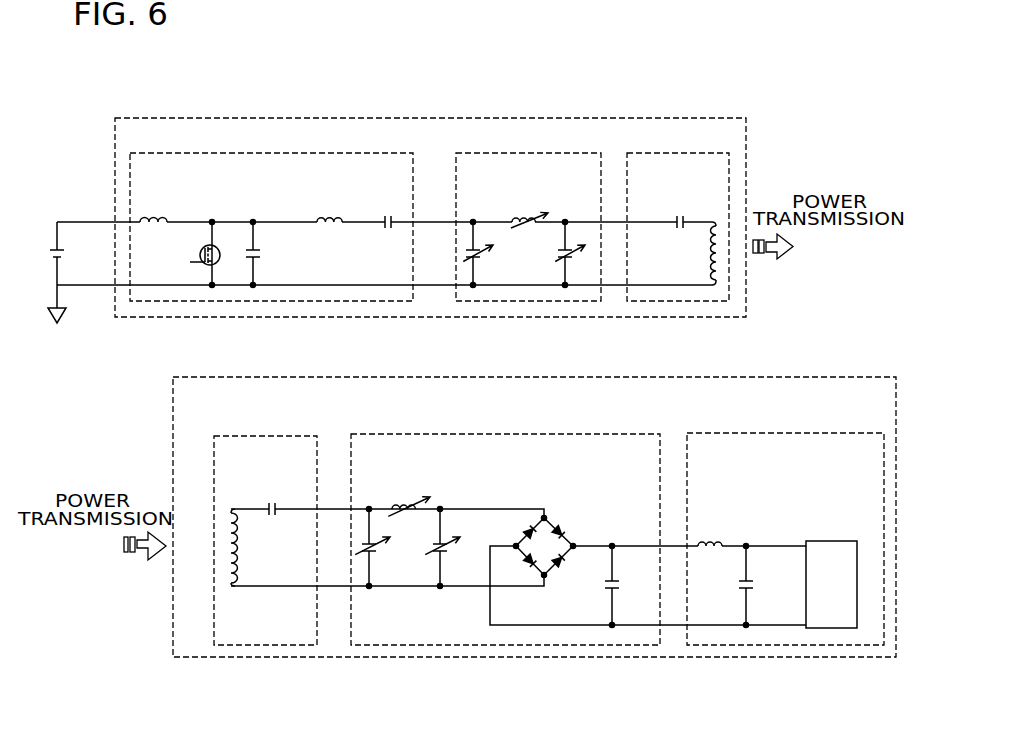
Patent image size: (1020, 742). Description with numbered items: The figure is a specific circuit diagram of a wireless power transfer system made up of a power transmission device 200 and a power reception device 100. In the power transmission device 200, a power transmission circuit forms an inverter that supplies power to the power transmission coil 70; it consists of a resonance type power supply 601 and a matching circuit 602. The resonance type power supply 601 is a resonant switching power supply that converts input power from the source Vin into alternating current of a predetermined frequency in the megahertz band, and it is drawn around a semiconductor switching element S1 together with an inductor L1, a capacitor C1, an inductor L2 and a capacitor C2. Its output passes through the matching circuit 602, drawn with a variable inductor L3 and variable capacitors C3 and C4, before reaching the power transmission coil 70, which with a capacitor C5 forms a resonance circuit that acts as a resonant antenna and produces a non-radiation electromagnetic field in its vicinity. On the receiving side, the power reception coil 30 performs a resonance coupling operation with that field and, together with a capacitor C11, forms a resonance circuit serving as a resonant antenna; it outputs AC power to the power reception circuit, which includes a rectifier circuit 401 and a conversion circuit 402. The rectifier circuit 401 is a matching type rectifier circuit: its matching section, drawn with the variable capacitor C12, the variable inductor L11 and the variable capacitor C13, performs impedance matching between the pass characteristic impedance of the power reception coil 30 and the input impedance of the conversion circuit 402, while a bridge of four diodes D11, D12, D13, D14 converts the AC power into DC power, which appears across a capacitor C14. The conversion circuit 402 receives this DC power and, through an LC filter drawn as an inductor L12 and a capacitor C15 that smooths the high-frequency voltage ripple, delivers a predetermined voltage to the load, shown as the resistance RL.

The power transmission device 200 is at (162, 118).
The resonance type power supply 601 is at (240, 153).
The matching circuit 602 is at (491, 153).
The power transmission coil 70 is at (659, 153).
The power reception device 100 is at (221, 377).
The power reception coil 30 is at (258, 436).
The rectifier circuit 401 is at (383, 434).
The conversion circuit 402 is at (741, 433).
The input DC power source Vin is at (46, 272).
The choke inductor L1 is at (153, 207).
The semiconductor switching element S1 is at (201, 254).
The shunt capacitor C1 is at (269, 254).
The series inductor L2 is at (329, 207).
The series capacitor C2 is at (387, 210).
The variable inductor L3 is at (530, 212).
The variable capacitor C3 is at (482, 254).
The variable capacitor C4 is at (574, 254).
The capacitor C5 is at (678, 210).
The capacitor C11 is at (271, 499).
The variable capacitor C12 is at (383, 548).
The variable inductor L11 is at (409, 498).
The variable capacitor C13 is at (452, 548).
The rectifier diode D11 is at (514, 525).
The rectifier diode D12 is at (575, 525).
The rectifier diode D13 is at (514, 570).
The rectifier diode D14 is at (576, 570).
The smoothing capacitor C14 is at (629, 586).
The filter inductor L12 is at (712, 531).
The filter capacitor C15 is at (764, 586).
The load resistor RL is at (831, 584).